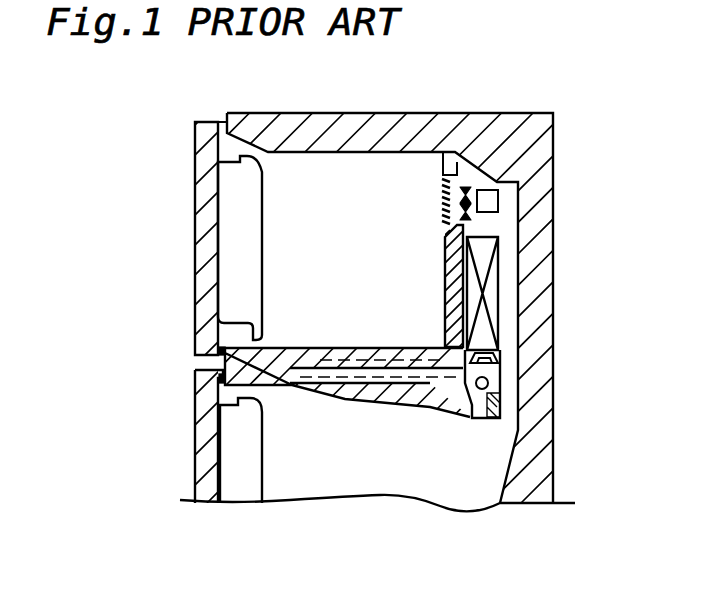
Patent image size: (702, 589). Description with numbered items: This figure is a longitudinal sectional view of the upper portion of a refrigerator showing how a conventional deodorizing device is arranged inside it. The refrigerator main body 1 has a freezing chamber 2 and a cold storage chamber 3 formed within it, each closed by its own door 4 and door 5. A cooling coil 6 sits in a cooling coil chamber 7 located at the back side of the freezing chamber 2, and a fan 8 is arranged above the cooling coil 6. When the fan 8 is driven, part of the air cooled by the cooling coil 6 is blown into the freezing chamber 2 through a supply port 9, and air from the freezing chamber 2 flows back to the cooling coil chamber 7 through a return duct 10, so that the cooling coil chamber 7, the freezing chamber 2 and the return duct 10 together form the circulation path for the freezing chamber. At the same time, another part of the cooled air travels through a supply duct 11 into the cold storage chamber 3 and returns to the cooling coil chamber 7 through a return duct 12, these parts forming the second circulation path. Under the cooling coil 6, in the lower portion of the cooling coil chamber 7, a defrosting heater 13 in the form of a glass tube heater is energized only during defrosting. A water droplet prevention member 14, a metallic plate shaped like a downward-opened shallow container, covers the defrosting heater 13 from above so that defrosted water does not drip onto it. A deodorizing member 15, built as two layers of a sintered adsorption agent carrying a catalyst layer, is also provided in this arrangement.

The refrigerator main body 1 is at (558, 160).
The freezing chamber 2 is at (293, 227).
The cold storage chamber 3 is at (287, 455).
The door 4 is at (195, 255).
The door 5 is at (287, 455).
The cooling coil 6 is at (490, 290).
The cooling coil chamber 7 is at (500, 318).
The fan 8 is at (467, 185).
The supply port 9 is at (438, 198).
The return duct 10 is at (298, 353).
The supply duct 11 is at (510, 260).
The return duct 12 is at (220, 350).
The defrosting heater 13 is at (498, 392).
The water droplet prevention member 14 is at (495, 362).
The deodorizing member 15 is at (490, 385).